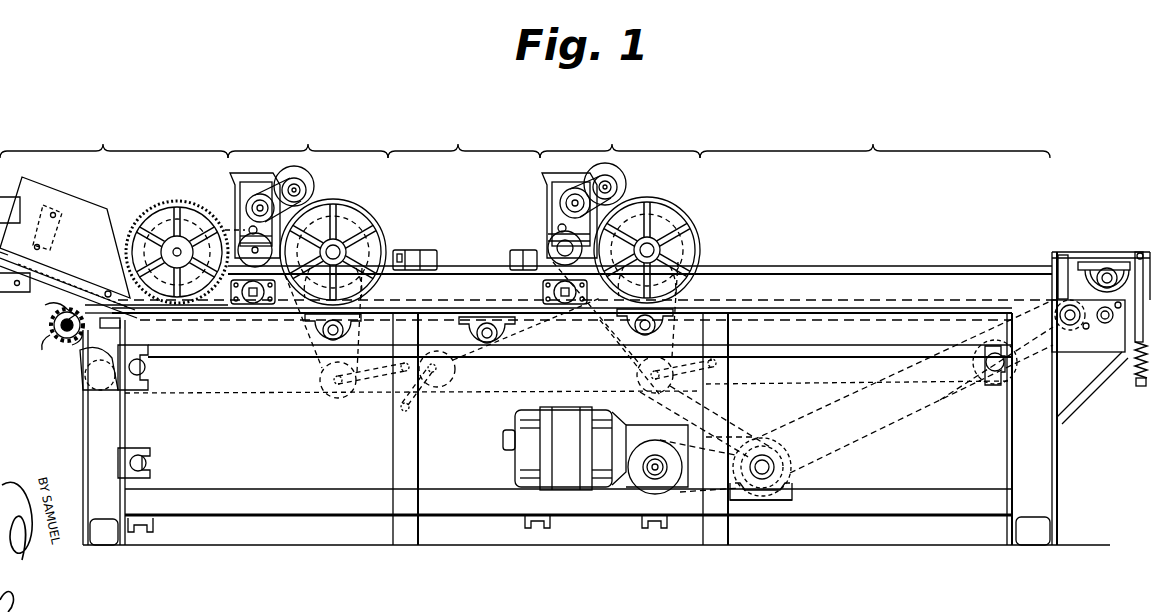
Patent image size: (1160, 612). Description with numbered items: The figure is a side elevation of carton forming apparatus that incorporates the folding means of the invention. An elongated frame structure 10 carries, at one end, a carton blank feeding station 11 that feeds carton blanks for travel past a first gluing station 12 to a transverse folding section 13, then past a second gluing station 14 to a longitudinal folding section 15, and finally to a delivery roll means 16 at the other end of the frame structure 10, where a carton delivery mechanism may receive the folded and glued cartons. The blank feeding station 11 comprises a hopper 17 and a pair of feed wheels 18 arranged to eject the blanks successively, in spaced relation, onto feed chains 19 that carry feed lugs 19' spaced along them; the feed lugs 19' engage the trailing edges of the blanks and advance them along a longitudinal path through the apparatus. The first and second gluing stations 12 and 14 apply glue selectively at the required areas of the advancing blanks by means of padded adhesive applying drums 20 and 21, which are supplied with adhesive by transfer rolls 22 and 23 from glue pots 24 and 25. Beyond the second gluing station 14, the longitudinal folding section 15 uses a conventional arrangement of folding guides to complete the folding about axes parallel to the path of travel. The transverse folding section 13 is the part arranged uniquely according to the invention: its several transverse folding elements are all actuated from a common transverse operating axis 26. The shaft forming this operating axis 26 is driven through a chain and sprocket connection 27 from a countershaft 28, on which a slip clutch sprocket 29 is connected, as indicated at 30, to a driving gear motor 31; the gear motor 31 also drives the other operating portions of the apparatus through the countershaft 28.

The frame structure 10 is at (338, 517).
The carton blank feeding station 11 is at (114, 139).
The first gluing station 12 is at (308, 139).
The transverse folding section 13 is at (464, 139).
The second gluing station 14 is at (620, 139).
The longitudinal folding section 15 is at (875, 139).
The delivery roll means 16 is at (1106, 267).
The hopper 17 is at (79, 206).
The feed wheels 18 is at (172, 203).
The feed chains 19 is at (45, 330).
The feed lugs 19' is at (71, 338).
The padded adhesive applying drum 20 is at (360, 212).
The padded adhesive applying drum 21 is at (670, 207).
The transfer roll 22 is at (312, 186).
The transfer roll 23 is at (623, 180).
The glue pot 24 is at (252, 180).
The glue pot 25 is at (558, 179).
The common transverse operating axis 26 is at (498, 334).
The chain and sprocket connection 27 is at (730, 404).
The countershaft 28 is at (764, 466).
The slip clutch sprocket 29 is at (788, 447).
The connection to gear motor 30 is at (690, 440).
The driving gear motor 31 is at (637, 426).